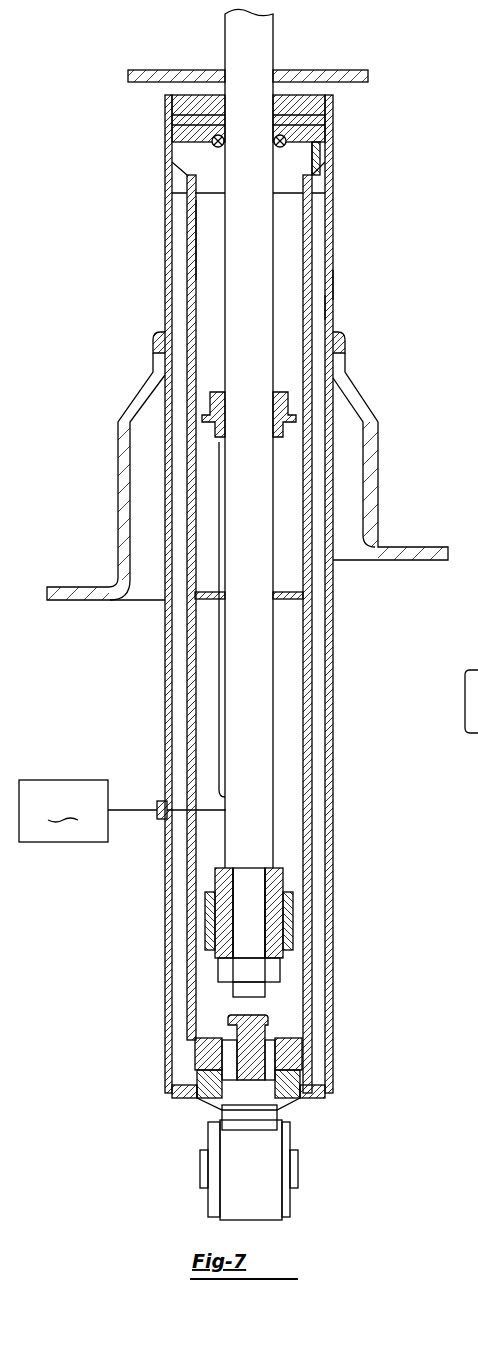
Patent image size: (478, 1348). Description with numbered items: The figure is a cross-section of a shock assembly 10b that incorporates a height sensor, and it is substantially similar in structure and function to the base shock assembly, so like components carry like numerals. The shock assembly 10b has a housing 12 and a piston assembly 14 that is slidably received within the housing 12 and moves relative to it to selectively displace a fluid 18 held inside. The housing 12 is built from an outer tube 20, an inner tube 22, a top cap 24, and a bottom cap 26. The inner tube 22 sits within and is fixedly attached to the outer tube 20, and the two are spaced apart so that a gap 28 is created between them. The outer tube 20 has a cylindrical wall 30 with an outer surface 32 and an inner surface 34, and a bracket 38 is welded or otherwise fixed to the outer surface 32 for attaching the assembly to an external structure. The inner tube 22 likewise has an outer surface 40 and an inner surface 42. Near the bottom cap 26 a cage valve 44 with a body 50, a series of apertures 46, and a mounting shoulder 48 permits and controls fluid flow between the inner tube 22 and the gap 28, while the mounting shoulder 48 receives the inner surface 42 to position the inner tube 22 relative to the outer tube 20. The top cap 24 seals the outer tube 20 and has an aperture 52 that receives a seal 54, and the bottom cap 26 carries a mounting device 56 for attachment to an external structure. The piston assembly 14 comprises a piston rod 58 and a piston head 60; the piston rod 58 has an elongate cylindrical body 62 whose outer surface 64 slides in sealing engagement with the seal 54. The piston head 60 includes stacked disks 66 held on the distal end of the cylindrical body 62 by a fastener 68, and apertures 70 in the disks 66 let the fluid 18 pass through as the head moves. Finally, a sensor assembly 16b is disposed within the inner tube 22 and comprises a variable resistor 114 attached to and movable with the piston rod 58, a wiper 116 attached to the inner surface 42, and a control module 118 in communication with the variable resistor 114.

The shock assembly 10b is at (388, 82).
The housing 12 is at (334, 186).
The piston assembly 14 is at (292, 767).
The sensor assembly 16b is at (208, 584).
The fluid 18 is at (215, 680).
The outer tube 20 is at (334, 261).
The inner tube 22 is at (191, 299).
The top cap 24 is at (307, 107).
The bottom cap 26 is at (318, 1100).
The gap 28 is at (182, 755).
The cylindrical wall 30 is at (327, 307).
The outer surface 32 is at (333, 286).
The inner surface 34 is at (300, 205).
The bracket 38 is at (125, 472).
The outer surface 40 is at (182, 220).
The inner surface 42 is at (198, 265).
The cage valve 44 is at (302, 1078).
The apertures 46 is at (268, 983).
The mounting shoulder 48 is at (190, 1058).
The body 50 is at (252, 1078).
The aperture 52 is at (280, 120).
The seal 54 is at (220, 128).
The mounting device 56 is at (262, 1195).
The piston rod 58 is at (275, 687).
The piston head 60 is at (283, 920).
The cylindrical body 62 is at (257, 618).
The outer surface 64 is at (243, 332).
The disks 66 is at (215, 882).
The fastener 68 is at (232, 968).
The apertures 70 is at (293, 930).
The variable resistor 114 is at (220, 667).
The wiper 116 is at (205, 600).
The control module 118 is at (122, 811).